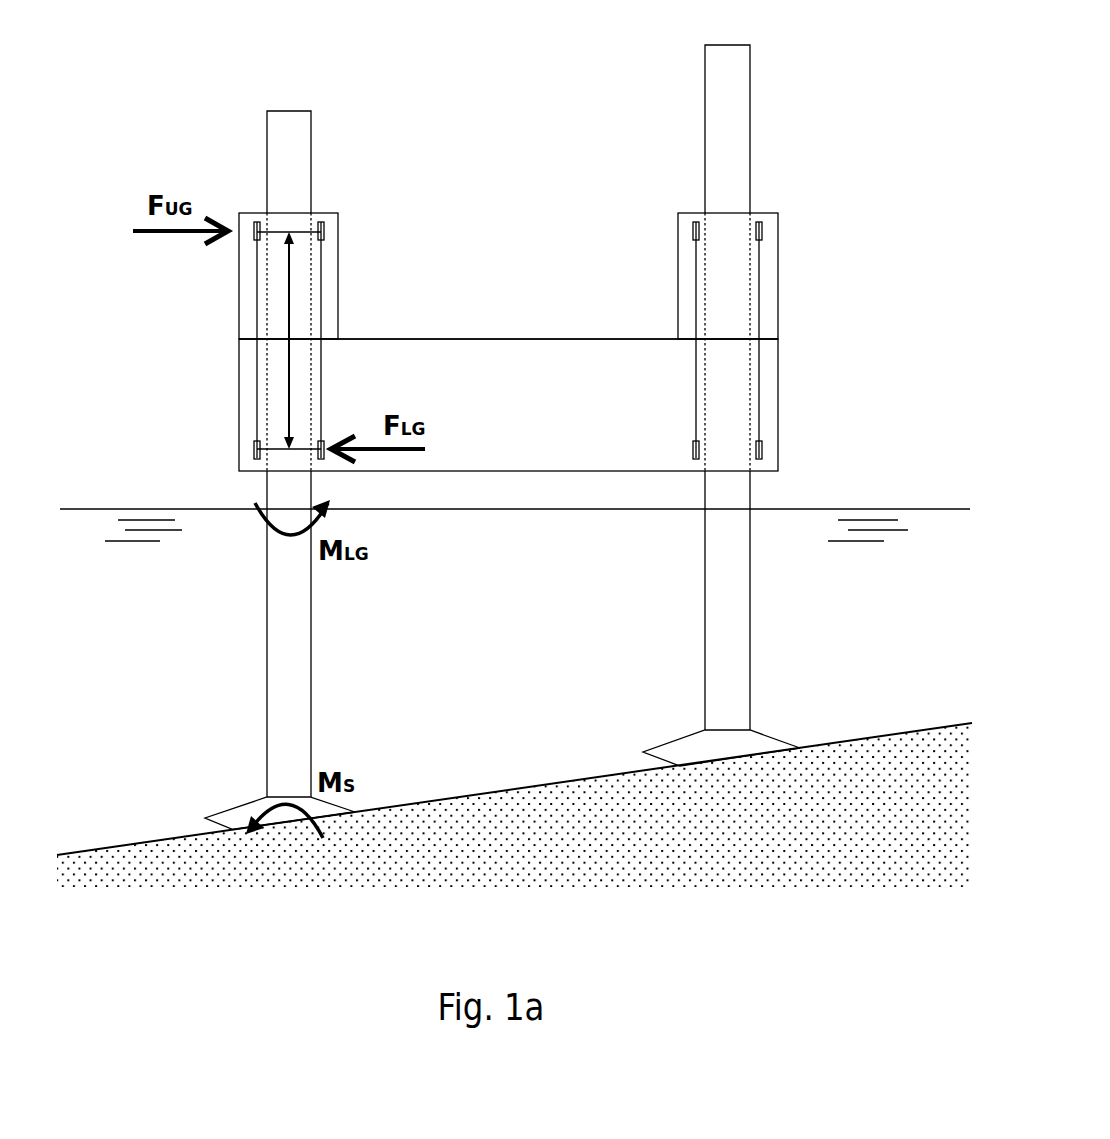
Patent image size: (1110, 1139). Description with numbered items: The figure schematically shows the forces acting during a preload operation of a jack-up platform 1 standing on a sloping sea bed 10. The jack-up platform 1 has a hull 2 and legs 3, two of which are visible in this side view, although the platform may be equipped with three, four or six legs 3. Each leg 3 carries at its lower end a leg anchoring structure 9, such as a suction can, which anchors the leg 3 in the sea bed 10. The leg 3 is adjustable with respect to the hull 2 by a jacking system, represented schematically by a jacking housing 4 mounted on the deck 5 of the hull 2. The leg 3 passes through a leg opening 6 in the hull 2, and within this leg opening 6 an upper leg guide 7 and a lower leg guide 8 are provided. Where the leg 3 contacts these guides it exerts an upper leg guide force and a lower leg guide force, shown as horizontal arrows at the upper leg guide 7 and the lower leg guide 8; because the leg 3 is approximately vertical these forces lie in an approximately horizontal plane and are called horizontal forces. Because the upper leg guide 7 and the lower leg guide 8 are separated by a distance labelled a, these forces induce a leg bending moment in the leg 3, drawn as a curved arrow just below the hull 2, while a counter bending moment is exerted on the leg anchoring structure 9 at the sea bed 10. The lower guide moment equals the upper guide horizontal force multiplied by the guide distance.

The jack-up platform 1 is at (804, 60).
The hull 2 is at (768, 410).
The leg 3 is at (738, 127).
The jacking housing 4 is at (330, 270).
The deck 5 is at (522, 338).
The leg opening 6 is at (257, 385).
The upper leg guide 7 is at (255, 237).
The lower leg guide 8 is at (255, 458).
The leg anchoring structure 9 is at (236, 816).
The sea bed 10 is at (175, 855).